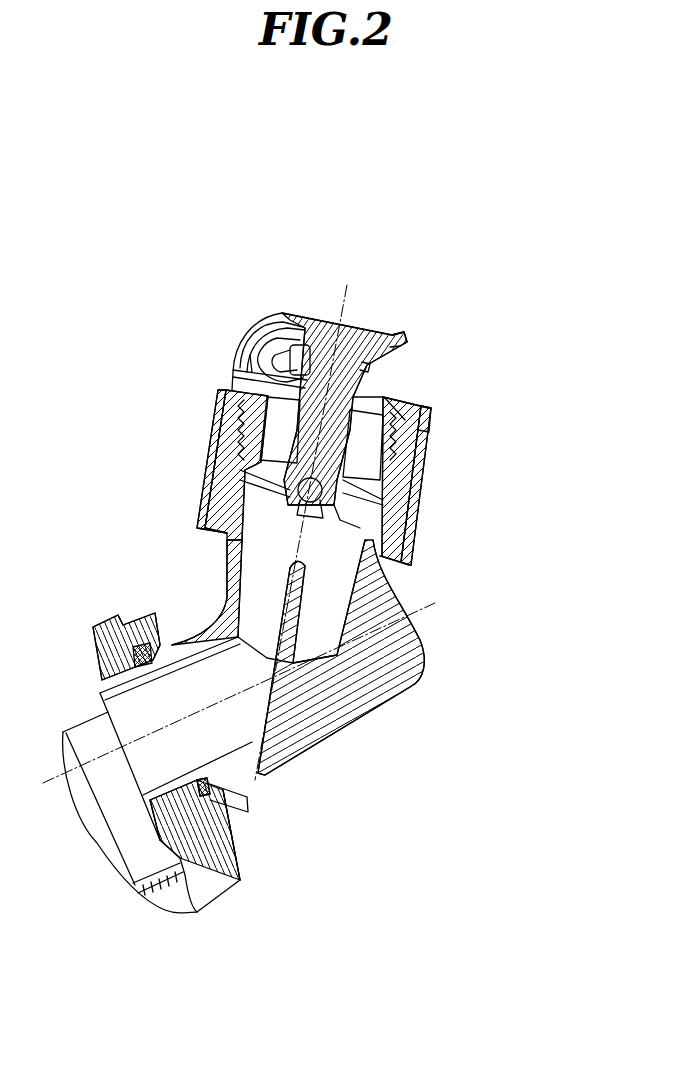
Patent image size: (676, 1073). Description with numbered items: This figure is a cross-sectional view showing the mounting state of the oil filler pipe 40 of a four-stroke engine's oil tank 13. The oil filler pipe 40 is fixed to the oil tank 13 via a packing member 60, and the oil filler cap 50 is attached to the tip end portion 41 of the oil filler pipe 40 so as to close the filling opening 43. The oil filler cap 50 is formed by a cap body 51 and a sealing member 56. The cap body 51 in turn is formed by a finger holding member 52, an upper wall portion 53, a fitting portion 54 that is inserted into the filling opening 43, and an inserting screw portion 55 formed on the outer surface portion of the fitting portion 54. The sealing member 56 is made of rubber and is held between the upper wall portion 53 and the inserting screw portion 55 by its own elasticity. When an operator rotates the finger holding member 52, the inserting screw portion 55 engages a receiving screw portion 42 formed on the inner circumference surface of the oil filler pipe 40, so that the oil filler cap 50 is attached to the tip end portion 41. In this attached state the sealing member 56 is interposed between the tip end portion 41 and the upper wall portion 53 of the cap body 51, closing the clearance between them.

The oil tank 13 is at (223, 818).
The oil filler pipe 40 is at (390, 652).
The tip end portion 41 is at (427, 425).
The receiving screw portion 42 is at (413, 440).
The filling opening 43 is at (340, 507).
The oil filler cap 50 is at (406, 410).
The cap body 51 is at (382, 410).
The finger holding member 52 is at (402, 340).
The upper wall portion 53 is at (366, 384).
The fitting portion 54 is at (388, 399).
The inserting screw portion 55 is at (437, 406).
The sealing member 56 is at (475, 424).
The packing member 60 is at (240, 790).